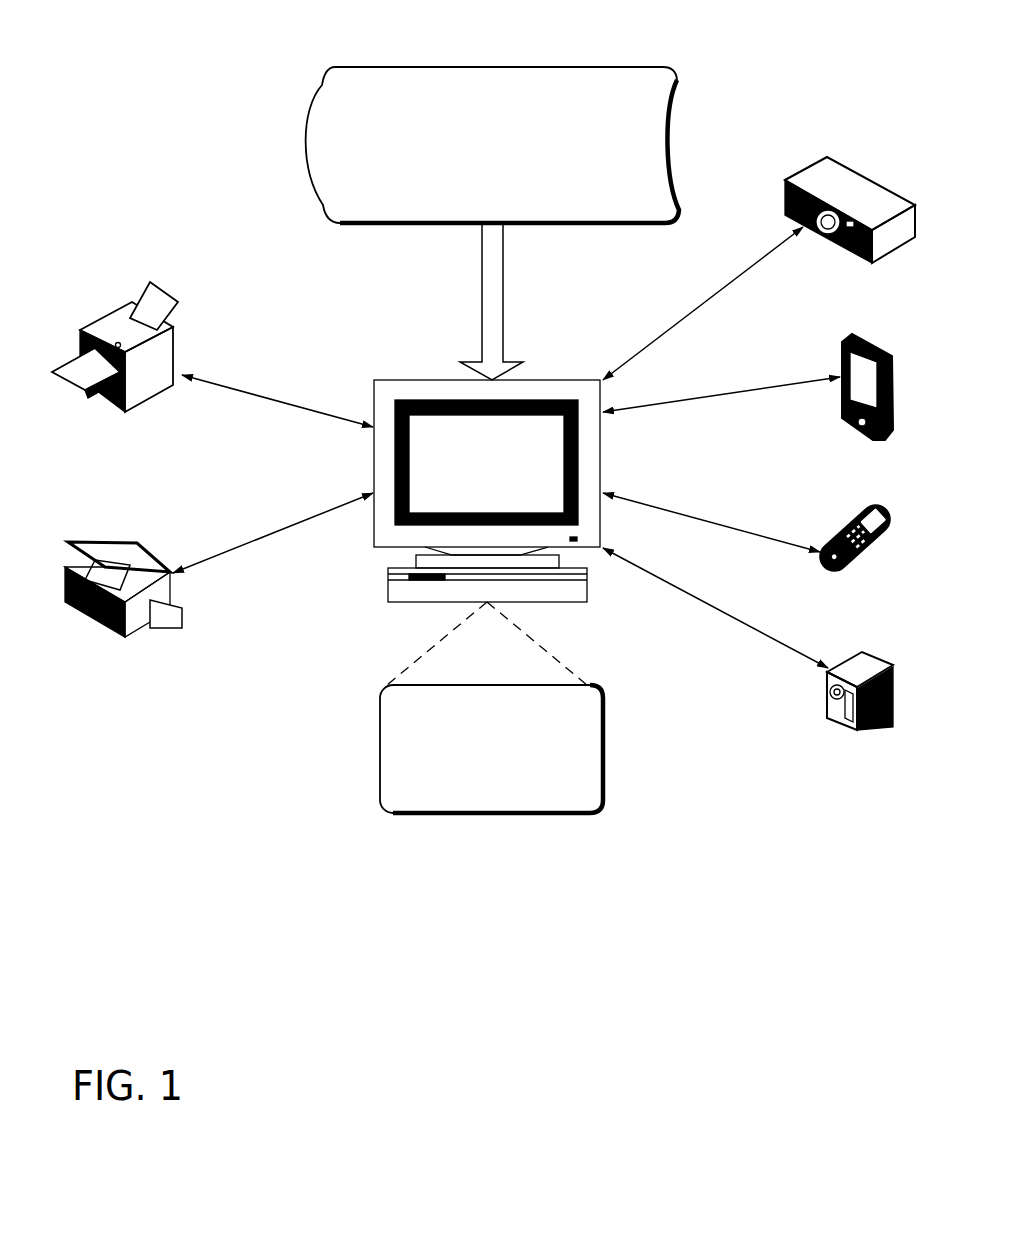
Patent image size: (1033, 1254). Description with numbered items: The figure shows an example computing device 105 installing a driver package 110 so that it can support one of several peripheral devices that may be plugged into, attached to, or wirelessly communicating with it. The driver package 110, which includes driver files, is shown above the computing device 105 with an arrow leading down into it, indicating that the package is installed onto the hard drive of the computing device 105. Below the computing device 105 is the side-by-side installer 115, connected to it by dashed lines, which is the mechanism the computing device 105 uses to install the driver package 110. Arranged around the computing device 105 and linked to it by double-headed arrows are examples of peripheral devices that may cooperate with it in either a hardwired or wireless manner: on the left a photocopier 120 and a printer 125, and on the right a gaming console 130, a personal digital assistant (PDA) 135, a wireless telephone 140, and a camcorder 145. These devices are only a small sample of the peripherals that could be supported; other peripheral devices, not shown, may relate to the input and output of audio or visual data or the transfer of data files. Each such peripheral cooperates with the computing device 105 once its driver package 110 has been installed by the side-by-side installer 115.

The computing device 105 is at (373, 380).
The driver package 110 is at (302, 147).
The side-by-side installer 115 is at (378, 750).
The photocopier 120 is at (110, 542).
The printer 125 is at (120, 305).
The gaming console 130 is at (853, 168).
The personal digital assistant (PDA) 135 is at (857, 333).
The wireless telephone 140 is at (857, 512).
The camcorder 145 is at (868, 650).